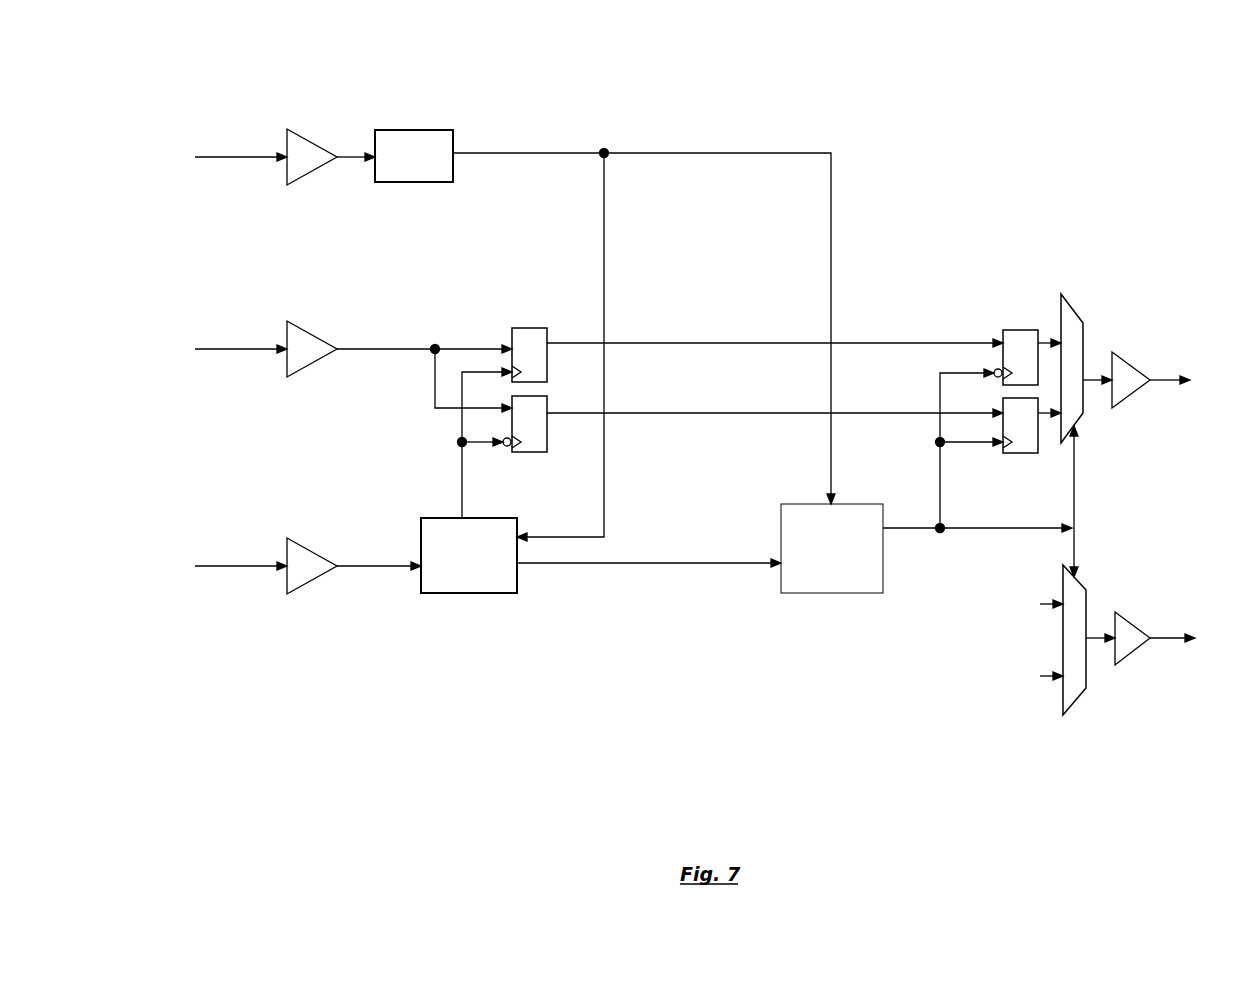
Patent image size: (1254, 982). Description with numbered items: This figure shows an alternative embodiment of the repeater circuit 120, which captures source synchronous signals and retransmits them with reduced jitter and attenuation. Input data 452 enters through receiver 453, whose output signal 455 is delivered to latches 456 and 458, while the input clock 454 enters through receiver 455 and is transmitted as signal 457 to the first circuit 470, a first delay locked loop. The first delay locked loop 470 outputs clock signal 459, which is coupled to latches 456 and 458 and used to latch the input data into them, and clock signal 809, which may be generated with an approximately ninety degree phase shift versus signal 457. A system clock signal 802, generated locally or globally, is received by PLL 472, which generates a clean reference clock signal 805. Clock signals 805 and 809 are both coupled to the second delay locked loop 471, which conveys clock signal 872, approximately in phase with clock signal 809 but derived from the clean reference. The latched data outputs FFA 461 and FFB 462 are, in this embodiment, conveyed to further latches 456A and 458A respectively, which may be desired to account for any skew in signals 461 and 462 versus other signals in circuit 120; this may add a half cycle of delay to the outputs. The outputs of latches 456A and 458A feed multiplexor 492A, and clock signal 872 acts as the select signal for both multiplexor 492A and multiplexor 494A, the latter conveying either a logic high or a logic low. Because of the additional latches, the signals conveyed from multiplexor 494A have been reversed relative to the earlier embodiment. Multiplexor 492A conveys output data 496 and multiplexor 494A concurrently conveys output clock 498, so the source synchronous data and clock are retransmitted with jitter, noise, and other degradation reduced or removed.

The circuit 120 is at (896, 152).
The system clock signal 802 is at (250, 158).
The PLL 472 is at (403, 174).
The clock signal 805 is at (650, 153).
The source synchronous signal 452 is at (220, 349).
The receiver 453 is at (308, 366).
The receiver 455 is at (410, 350).
The latch 456 is at (537, 338).
The latch 458 is at (537, 445).
The clock signal 459 is at (458, 456).
The FFA 461 is at (741, 344).
The FFB 462 is at (738, 415).
The source synchronous signal 454 is at (230, 567).
The signal 457 is at (392, 568).
The first circuit 470 is at (458, 580).
The clock signal 809 is at (669, 563).
The DLL-2 471 is at (821, 580).
The clock signal 872 is at (977, 528).
The latch 456A is at (1020, 330).
The latch 458A is at (1020, 455).
The multiplexor 492A is at (1078, 313).
The output data 496 is at (1165, 382).
The multiplexor 494A is at (1068, 712).
The output clock 498 is at (1163, 640).